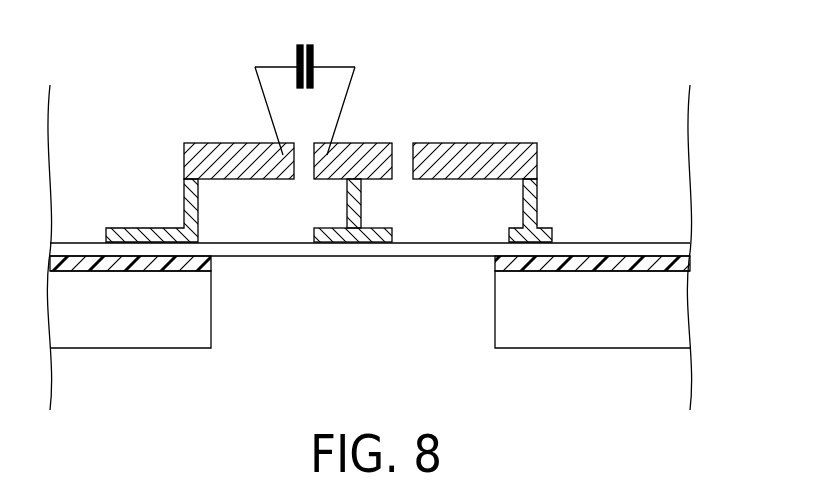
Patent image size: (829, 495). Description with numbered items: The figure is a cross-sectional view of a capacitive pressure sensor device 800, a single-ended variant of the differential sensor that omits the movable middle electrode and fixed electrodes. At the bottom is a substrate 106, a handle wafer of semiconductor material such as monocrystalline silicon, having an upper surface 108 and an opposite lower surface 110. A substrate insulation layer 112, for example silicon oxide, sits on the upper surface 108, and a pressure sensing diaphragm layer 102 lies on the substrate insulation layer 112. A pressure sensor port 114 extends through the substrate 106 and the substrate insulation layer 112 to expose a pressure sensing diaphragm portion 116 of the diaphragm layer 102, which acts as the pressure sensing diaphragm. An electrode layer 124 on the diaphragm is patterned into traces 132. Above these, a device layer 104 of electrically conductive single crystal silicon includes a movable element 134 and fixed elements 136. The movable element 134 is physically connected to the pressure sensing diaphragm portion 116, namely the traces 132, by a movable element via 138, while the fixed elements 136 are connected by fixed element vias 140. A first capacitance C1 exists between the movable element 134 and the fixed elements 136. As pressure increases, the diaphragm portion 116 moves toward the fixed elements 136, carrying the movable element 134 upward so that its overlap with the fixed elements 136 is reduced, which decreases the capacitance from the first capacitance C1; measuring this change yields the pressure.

The capacitive pressure sensor device 800 is at (166, 406).
The pressure sensing diaphragm layer 102 is at (700, 248).
The device layer 104 is at (555, 159).
The substrate 106 is at (557, 320).
The upper surface 108 is at (643, 272).
The lower surface 110 is at (615, 348).
The substrate insulation layer 112 is at (700, 266).
The pressure sensor port 114 is at (279, 320).
The pressure sensing diaphragm portion 116 is at (442, 260).
The electrode layer 124 is at (560, 236).
The traces 132 is at (385, 234).
The movable element 134 is at (376, 150).
The fixed elements 136 is at (218, 148).
The movable element via 138 is at (352, 200).
The fixed element vias 140 is at (187, 200).
The first capacitance C1 is at (305, 96).